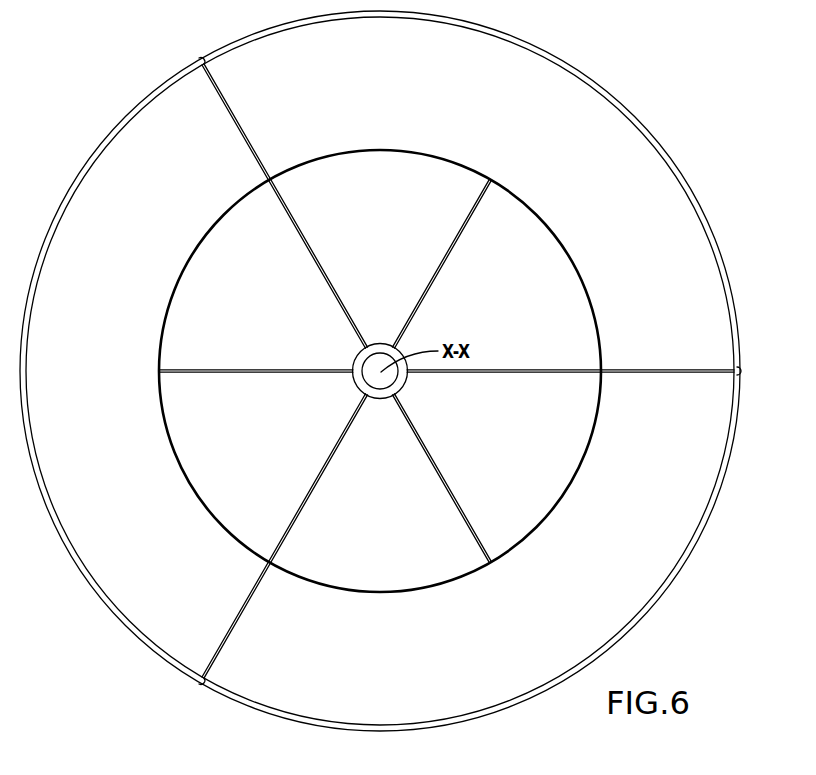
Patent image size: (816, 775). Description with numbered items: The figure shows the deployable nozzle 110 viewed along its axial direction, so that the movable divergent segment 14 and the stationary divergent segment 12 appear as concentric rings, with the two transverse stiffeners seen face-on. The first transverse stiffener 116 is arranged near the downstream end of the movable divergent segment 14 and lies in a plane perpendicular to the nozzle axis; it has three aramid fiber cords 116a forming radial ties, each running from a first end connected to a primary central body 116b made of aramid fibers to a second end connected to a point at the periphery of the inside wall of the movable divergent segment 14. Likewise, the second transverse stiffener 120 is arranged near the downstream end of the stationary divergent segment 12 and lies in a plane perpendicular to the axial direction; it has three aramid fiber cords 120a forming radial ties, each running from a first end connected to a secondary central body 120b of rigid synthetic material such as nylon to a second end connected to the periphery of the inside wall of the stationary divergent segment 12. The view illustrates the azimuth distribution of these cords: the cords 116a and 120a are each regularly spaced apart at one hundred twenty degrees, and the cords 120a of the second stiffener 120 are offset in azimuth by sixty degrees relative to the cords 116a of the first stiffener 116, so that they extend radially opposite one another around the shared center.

The deployable nozzle 110 is at (96, 114).
The movable divergent segment 14 is at (610, 97).
The stationary divergent segment 12 is at (525, 203).
The first transverse stiffener 116 is at (232, 125).
The aramid fiber cords 116a is at (262, 157).
The primary central body 116b is at (377, 384).
The second transverse stiffener 120 is at (281, 375).
The aramid fiber cords 120a is at (447, 250).
The secondary central body 120b is at (381, 346).